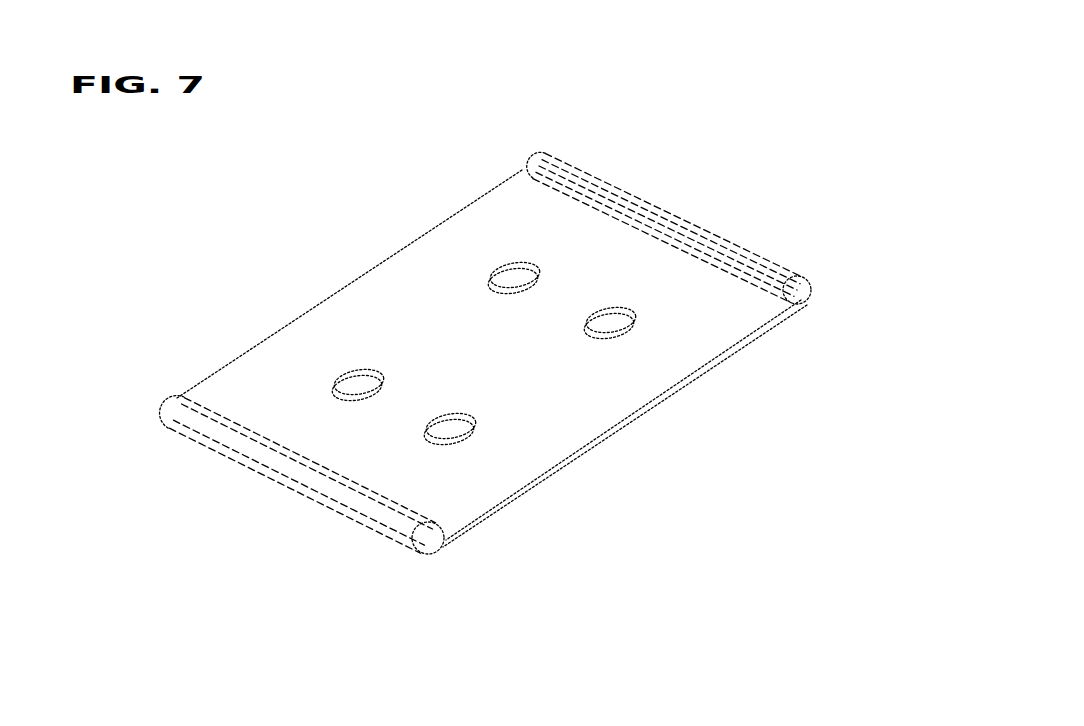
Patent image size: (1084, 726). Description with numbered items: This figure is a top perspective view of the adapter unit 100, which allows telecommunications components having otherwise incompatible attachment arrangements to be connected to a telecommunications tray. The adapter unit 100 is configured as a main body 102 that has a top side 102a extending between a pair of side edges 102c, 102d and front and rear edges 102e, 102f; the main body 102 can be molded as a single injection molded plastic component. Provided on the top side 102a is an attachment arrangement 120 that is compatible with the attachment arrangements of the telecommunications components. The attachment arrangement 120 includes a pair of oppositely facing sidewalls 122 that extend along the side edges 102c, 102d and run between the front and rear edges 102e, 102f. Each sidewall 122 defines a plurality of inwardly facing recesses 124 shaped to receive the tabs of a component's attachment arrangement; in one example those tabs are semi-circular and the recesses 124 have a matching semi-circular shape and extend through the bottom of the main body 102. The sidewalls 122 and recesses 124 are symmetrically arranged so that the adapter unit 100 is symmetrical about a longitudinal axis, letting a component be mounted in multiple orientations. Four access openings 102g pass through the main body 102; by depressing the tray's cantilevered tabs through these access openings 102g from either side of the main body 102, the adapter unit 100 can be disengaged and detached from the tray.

The adapter unit 100 is at (196, 223).
The main body 102 is at (731, 343).
The top side 102a is at (575, 432).
The side edge 102c is at (240, 468).
The side edge 102d is at (703, 233).
The front edge 102e is at (443, 220).
The rear edge 102f is at (670, 387).
The access openings 102g is at (510, 265).
The attachment arrangement 120 is at (508, 143).
The sidewalls 122 is at (633, 200).
The recesses 124 is at (607, 205).